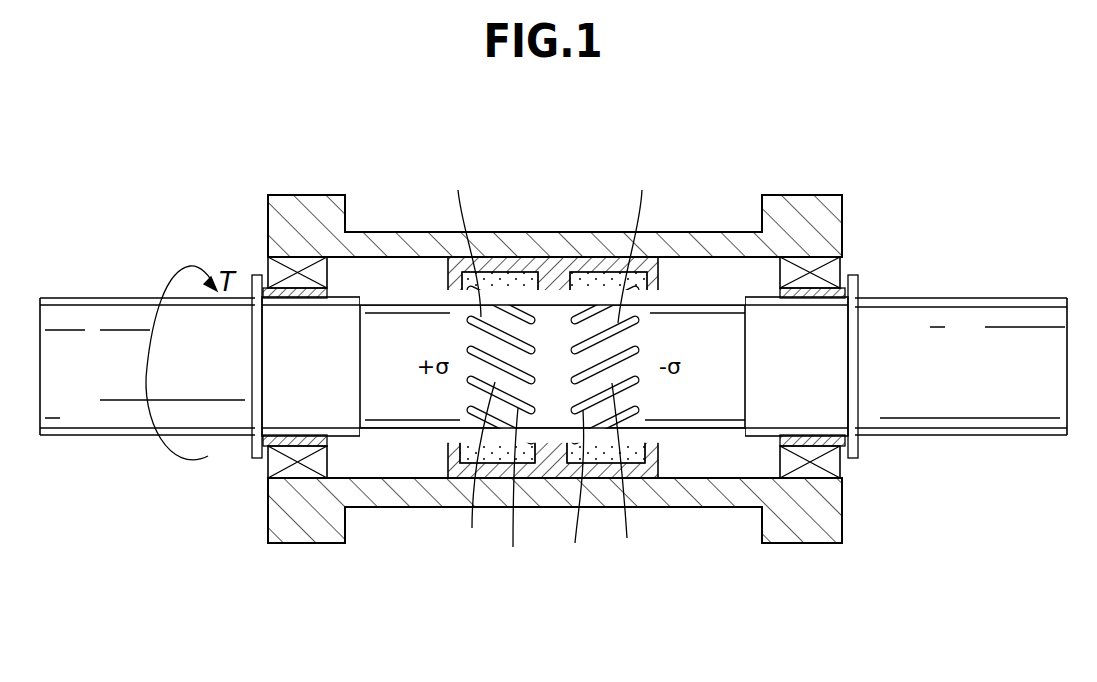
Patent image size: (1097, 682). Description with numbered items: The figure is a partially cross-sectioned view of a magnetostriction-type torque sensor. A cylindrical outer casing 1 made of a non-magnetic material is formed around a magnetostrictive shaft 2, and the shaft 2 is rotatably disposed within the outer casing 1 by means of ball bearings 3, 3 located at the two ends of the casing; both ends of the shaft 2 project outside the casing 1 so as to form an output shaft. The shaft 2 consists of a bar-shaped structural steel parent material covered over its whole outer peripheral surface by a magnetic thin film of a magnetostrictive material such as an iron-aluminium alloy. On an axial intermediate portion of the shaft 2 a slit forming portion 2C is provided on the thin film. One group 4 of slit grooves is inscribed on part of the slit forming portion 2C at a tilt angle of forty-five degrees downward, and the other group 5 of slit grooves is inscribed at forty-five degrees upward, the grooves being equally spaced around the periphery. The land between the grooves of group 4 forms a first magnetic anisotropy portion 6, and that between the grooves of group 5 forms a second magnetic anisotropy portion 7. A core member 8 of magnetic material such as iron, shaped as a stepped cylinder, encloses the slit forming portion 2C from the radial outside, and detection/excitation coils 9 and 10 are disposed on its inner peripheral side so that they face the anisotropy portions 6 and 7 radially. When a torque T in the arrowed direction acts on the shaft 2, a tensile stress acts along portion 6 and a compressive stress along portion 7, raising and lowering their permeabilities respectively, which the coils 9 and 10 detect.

The cylindrical outer casing 1 is at (397, 234).
The magnetostrictive shaft 2 is at (97, 294).
The slit forming portion 2C is at (712, 305).
The ball bearing 3 is at (268, 262).
The one group of slit grooves 4 is at (481, 317).
The other group of slit grooves 5 is at (618, 323).
The first magnetic anisotropy portion 6 is at (495, 382).
The second magnetic anisotropy portion 7 is at (612, 383).
The core member 8 is at (553, 470).
The detection/excitation coil 9 is at (521, 268).
The detection/excitation coil 10 is at (593, 270).